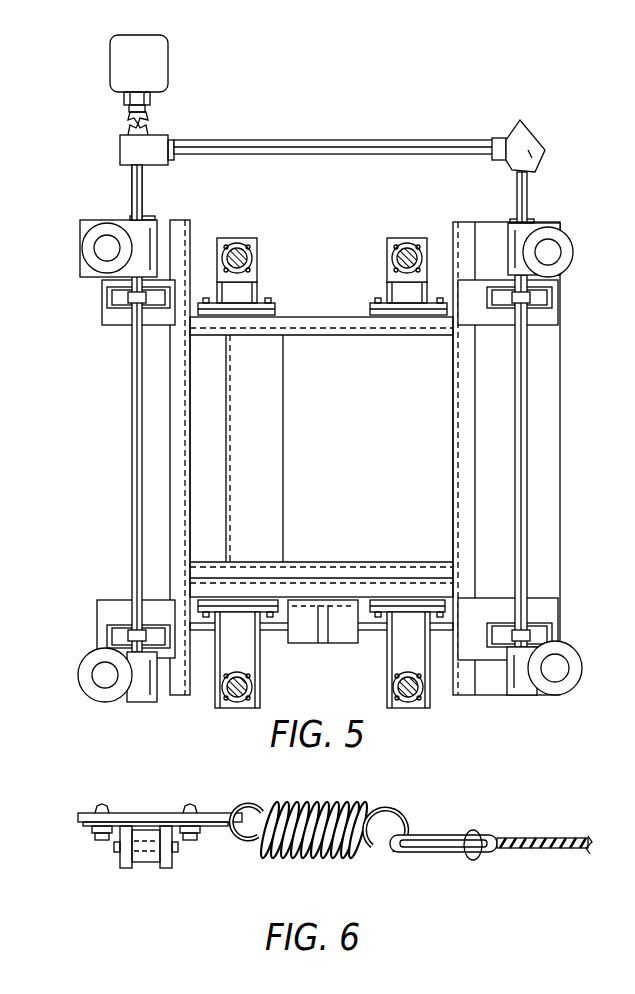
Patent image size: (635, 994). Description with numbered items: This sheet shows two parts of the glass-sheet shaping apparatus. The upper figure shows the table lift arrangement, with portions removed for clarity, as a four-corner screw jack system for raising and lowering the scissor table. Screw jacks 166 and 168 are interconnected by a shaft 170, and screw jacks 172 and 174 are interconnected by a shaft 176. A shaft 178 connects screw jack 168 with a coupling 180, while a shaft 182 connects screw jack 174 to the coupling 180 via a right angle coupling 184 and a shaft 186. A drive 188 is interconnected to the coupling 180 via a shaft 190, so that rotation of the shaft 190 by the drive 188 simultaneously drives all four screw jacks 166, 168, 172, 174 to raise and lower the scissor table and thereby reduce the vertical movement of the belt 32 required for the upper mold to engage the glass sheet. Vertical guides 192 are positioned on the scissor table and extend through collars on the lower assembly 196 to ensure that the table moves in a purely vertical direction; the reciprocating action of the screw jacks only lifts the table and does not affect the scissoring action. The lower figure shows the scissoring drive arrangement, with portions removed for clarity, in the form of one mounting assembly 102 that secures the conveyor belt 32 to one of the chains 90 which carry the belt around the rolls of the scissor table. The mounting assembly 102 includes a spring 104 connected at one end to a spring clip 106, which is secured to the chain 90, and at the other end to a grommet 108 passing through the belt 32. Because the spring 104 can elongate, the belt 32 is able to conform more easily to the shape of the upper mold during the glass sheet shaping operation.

In FIG. 6, the conveyor belt 32 is at (543, 838).
In FIG. 6, the chain 90 is at (143, 868).
In FIG. 6, the mounting assembly 102 is at (452, 792).
In FIG. 6, the spring 104 is at (336, 806).
In FIG. 6, the spring clip 106 is at (153, 812).
In FIG. 6, the grommet 108 is at (440, 853).
In FIG. 5, the screw jack 166 is at (88, 670).
In FIG. 5, the screw jack 168 is at (92, 250).
In FIG. 5, the shaft 170 is at (132, 398).
In FIG. 5, the screw jack 172 is at (575, 652).
In FIG. 5, the screw jack 174 is at (570, 262).
In FIG. 5, the shaft 176 is at (528, 385).
In FIG. 5, the shaft 178 is at (133, 191).
In FIG. 5, the coupling 180 is at (120, 150).
In FIG. 5, the shaft 182 is at (400, 140).
In FIG. 5, the right angle coupling 184 is at (533, 132).
In FIG. 5, the shaft 186 is at (530, 187).
In FIG. 5, the drive 188 is at (167, 48).
In FIG. 5, the shaft 190 is at (149, 116).
In FIG. 5, the vertical guide 192 is at (405, 255).
In FIG. 5, the lower assembly 196 is at (478, 457).